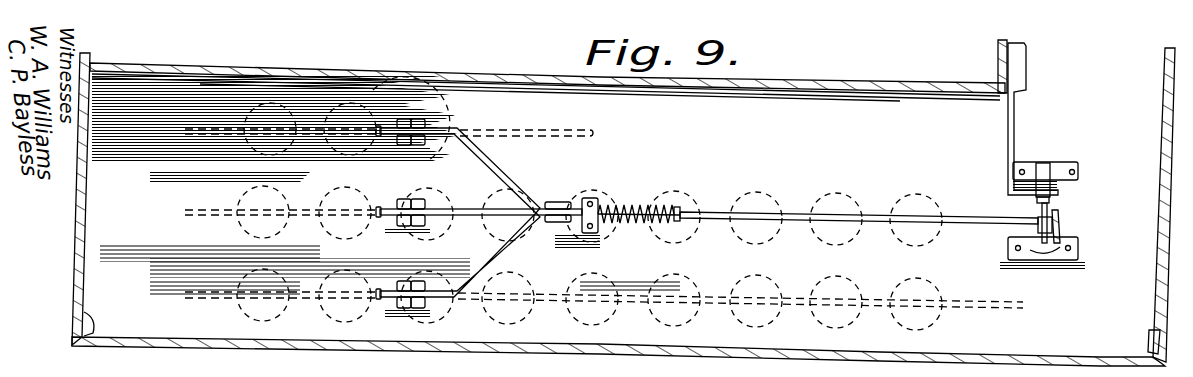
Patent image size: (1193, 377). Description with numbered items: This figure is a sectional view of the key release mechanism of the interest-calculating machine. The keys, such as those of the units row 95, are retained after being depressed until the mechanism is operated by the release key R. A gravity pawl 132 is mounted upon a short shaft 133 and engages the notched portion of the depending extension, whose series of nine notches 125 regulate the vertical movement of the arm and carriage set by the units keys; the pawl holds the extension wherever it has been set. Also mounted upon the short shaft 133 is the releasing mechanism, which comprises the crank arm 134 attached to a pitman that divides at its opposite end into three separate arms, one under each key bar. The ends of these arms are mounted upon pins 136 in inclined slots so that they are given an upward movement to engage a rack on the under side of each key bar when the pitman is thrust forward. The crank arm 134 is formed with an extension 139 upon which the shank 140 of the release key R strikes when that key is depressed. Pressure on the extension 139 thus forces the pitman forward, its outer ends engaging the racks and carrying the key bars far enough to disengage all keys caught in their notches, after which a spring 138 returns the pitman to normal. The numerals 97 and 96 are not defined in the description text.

The float or bulb 97 is at (388, 62).
The middle row of openings 96 is at (282, 232).
The units row 95 is at (662, 278).
The pins 136 is at (406, 229).
The spring 138 is at (615, 212).
The notches 125 is at (1025, 192).
The gravity pawl 132 is at (1065, 190).
The short shaft 133 is at (1052, 206).
The shank 140 is at (1055, 223).
The extension 139 is at (1062, 230).
The crank arm 134 is at (1036, 230).
The release key R is at (1083, 238).